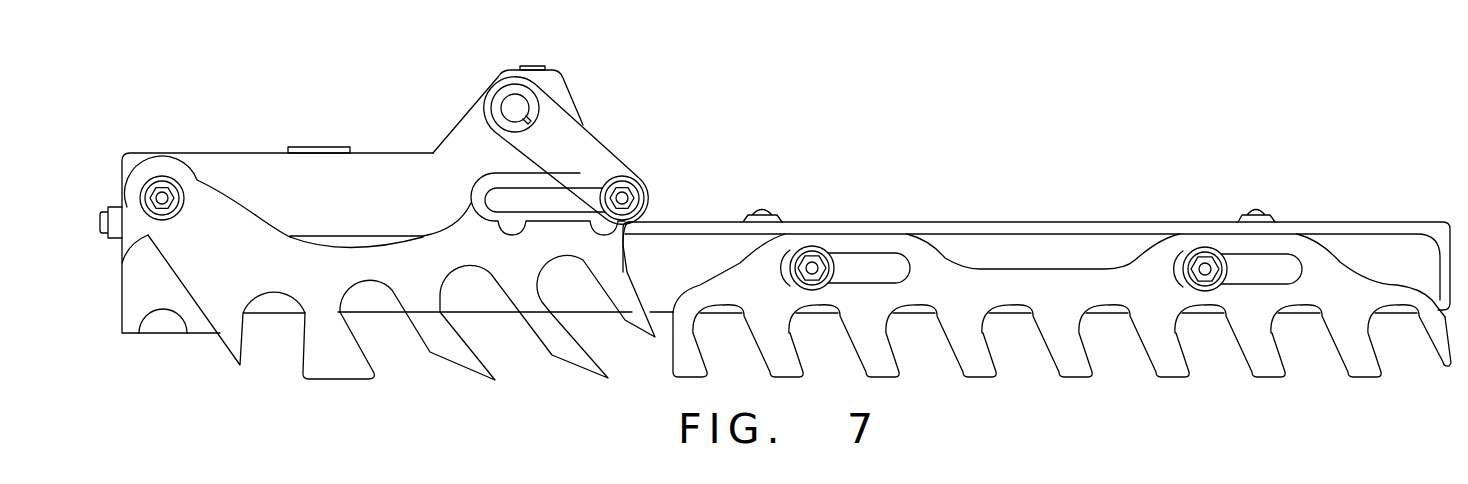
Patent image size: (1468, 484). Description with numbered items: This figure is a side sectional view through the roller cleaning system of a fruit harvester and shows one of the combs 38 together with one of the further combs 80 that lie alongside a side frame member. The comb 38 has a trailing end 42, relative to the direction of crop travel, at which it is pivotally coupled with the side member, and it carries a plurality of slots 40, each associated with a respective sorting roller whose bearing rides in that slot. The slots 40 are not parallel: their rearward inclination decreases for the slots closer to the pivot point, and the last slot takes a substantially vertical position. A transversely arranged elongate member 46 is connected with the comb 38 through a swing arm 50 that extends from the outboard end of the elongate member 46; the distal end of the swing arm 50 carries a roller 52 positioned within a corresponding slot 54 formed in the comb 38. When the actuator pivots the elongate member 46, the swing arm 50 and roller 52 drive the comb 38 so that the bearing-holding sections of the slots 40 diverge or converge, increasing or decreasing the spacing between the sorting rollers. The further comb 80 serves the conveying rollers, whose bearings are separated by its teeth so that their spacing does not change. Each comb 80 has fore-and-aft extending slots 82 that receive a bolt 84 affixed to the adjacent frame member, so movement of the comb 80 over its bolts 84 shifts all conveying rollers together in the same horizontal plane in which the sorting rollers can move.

The comb 38 is at (207, 218).
The slots 40 is at (400, 358).
The trailing end 42 is at (140, 177).
The elongate member 46 is at (515, 108).
The swing arm 50 is at (607, 155).
The roller 52 is at (640, 187).
The slot 54 is at (530, 187).
The comb 80 is at (947, 263).
The slot 82 is at (858, 252).
The bolt 84 is at (812, 246).